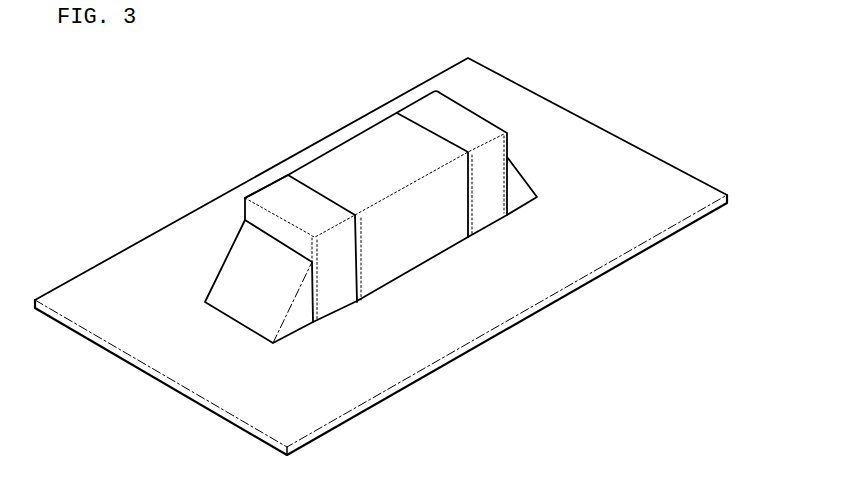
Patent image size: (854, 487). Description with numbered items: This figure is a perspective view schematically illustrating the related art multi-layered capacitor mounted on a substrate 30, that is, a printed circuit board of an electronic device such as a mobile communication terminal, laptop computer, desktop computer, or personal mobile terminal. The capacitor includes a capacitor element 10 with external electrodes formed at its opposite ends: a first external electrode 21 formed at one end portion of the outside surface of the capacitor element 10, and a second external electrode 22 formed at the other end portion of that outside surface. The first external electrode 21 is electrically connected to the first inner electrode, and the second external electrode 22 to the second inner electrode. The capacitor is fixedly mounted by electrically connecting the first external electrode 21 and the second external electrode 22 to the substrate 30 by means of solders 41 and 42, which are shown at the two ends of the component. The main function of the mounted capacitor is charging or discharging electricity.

The capacitor element 10 is at (412, 260).
The first external electrode 21 is at (337, 303).
The second external electrode 22 is at (485, 218).
The substrate 30 is at (627, 235).
The solder 41 is at (250, 315).
The solder 42 is at (513, 185).